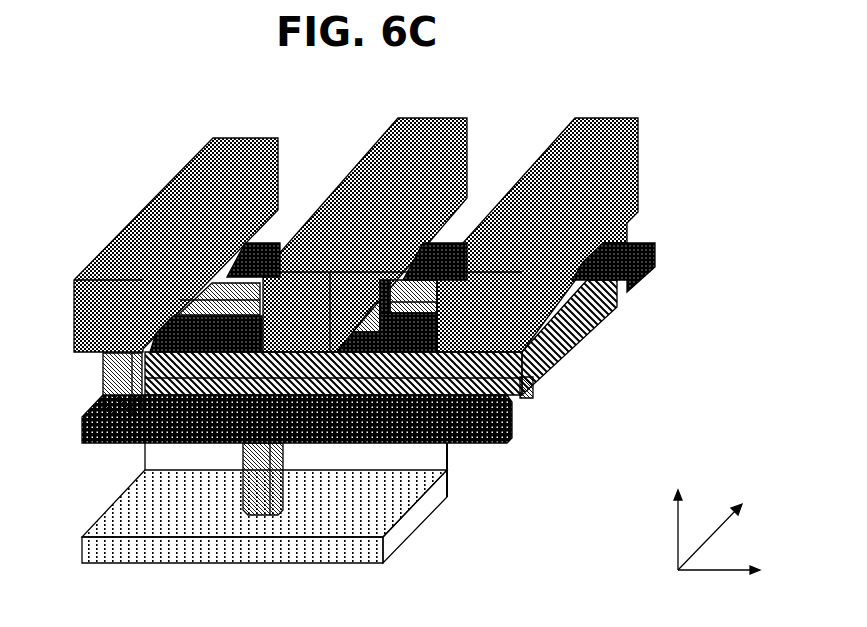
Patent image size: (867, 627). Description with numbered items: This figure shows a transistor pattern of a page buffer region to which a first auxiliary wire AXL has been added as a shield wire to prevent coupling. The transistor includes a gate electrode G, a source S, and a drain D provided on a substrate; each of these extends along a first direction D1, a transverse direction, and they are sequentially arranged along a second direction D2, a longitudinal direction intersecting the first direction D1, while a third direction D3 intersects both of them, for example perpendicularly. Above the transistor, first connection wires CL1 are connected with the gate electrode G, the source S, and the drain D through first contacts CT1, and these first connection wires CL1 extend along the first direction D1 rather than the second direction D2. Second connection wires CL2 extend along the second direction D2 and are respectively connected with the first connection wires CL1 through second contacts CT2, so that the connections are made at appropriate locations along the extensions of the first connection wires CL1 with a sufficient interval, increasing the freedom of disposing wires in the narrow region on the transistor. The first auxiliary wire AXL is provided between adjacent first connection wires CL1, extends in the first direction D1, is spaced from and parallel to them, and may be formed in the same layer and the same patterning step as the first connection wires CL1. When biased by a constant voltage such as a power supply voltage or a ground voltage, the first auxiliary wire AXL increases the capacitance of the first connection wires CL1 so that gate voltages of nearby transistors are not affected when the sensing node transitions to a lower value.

The second connection wires CL2 is at (642, 163).
The first connection wires CL1 is at (657, 270).
The drain D is at (593, 318).
The first auxiliary wire AXL is at (528, 382).
The gate electrode G is at (450, 445).
The first contacts CT1 is at (243, 490).
The second contacts CT2 is at (103, 383).
The source S is at (433, 497).
The first direction D1 is at (733, 575).
The second direction D2 is at (725, 531).
The third direction D3 is at (673, 516).